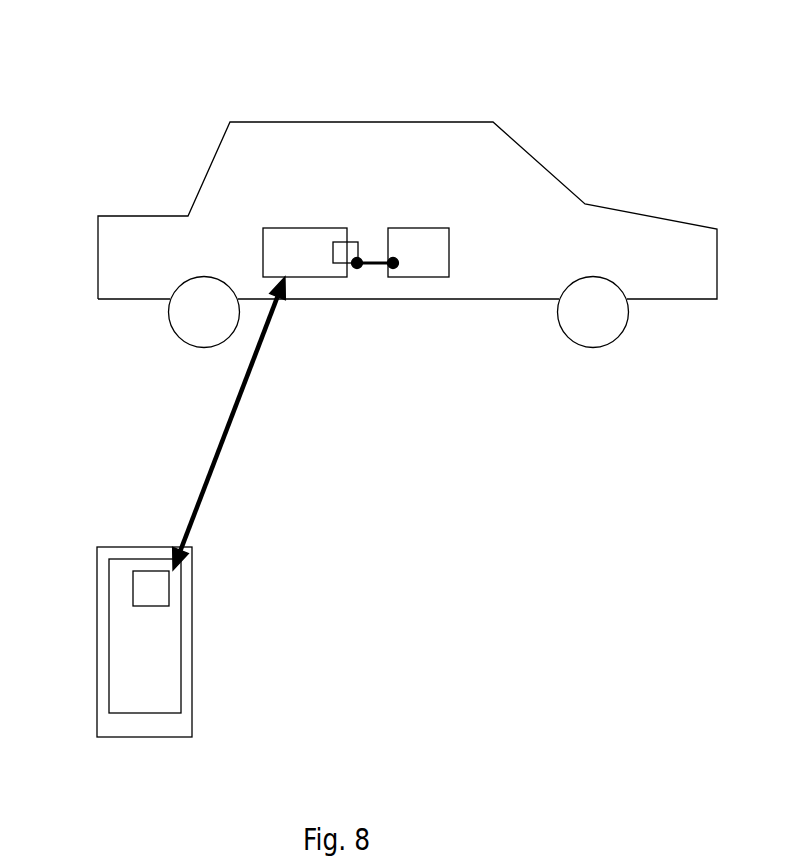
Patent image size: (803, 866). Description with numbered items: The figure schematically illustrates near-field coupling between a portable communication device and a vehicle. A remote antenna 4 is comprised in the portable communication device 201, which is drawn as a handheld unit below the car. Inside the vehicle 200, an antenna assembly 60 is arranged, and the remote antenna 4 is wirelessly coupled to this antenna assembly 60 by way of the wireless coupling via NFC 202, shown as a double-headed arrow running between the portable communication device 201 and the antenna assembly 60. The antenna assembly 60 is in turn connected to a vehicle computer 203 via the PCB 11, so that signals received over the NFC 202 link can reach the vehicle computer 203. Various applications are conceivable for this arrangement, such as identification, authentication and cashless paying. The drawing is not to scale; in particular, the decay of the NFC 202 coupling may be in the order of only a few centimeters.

The vehicle 200 is at (240, 122).
The antenna assembly 60 is at (275, 228).
The PCB 11 is at (357, 242).
The vehicle computer 203 is at (413, 228).
The NFC 202 is at (226, 418).
The portable communication device 201 is at (97, 547).
The remote antenna 4 is at (168, 584).